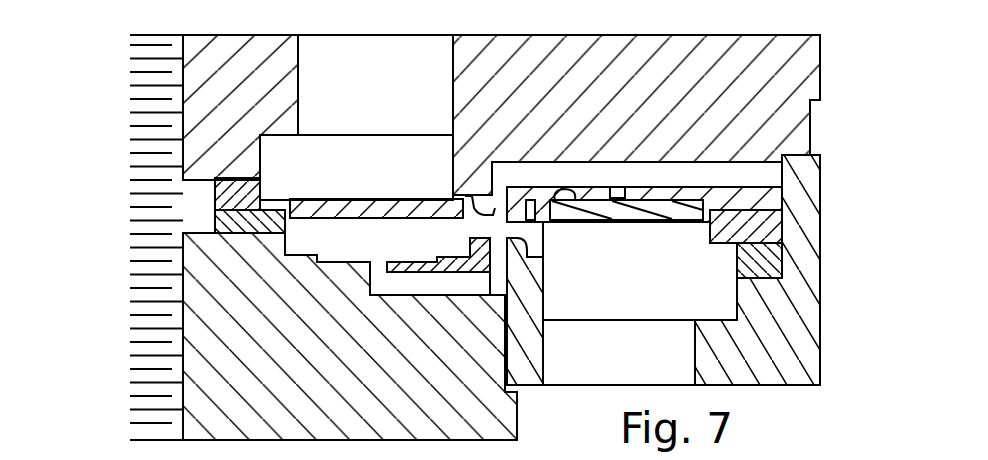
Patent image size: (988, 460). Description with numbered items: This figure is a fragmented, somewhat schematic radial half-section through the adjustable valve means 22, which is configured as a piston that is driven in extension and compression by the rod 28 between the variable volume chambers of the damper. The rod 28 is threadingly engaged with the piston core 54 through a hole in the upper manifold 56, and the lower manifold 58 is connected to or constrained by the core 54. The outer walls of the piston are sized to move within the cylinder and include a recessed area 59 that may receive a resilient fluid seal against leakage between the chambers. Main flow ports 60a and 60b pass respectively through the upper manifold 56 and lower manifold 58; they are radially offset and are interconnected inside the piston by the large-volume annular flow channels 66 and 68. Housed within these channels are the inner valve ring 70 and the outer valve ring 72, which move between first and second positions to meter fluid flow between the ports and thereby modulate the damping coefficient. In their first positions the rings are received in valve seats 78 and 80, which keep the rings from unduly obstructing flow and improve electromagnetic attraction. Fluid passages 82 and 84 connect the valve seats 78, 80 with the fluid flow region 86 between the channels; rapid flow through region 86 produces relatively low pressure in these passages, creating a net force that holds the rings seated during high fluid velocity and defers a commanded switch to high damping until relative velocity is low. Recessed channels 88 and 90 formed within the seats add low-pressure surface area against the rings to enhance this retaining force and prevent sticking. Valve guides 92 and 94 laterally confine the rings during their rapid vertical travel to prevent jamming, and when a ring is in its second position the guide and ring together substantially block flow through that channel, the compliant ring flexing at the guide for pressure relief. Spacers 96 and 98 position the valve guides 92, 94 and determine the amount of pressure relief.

The adjustable valve means 22 is at (758, 27).
The rod 28 is at (130, 60).
The piston core 54 is at (190, 360).
The upper manifold 56 is at (227, 45).
The lower manifold 58 is at (807, 359).
The recessed area 59 is at (813, 110).
The main flow port 60a is at (357, 68).
The main flow port 60b is at (660, 357).
The annular flow channel 66 is at (368, 171).
The annular flow channel 68 is at (680, 305).
The inner valve ring 70 is at (325, 198).
The outer valve ring 72 is at (653, 223).
The valve seat 78 is at (290, 255).
The valve seat 80 is at (527, 215).
The fluid passage 82 is at (447, 287).
The fluid passage 84 is at (634, 180).
The fluid flow region 86 is at (495, 223).
The recessed channel 88 is at (347, 235).
The recessed channel 90 is at (565, 201).
The valve guide 92 is at (215, 226).
The valve guide 94 is at (772, 228).
The spacer 96 is at (213, 192).
The spacer 98 is at (775, 267).